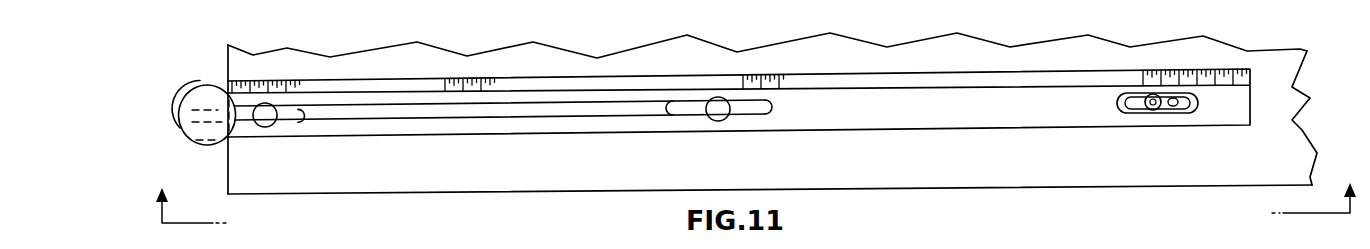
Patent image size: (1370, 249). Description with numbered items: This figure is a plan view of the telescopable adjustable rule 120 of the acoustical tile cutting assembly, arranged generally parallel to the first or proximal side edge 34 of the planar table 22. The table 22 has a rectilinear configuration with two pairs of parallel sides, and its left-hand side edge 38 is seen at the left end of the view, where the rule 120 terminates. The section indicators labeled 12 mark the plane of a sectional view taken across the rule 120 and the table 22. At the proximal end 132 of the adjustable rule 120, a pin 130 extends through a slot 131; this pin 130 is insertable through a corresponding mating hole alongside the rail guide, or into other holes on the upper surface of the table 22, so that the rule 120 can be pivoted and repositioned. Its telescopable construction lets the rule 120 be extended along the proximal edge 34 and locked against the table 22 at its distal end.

The section line 12- 12 is at (758, 189).
The table 22 is at (507, 173).
The first or proximal side edge 34 is at (540, 195).
The left-hand side edge 38 is at (228, 182).
The telescopable adjustable rule 120 is at (917, 118).
The pin 130 is at (1152, 110).
The slot 131 is at (1174, 107).
The proximal end 132 is at (1168, 128).